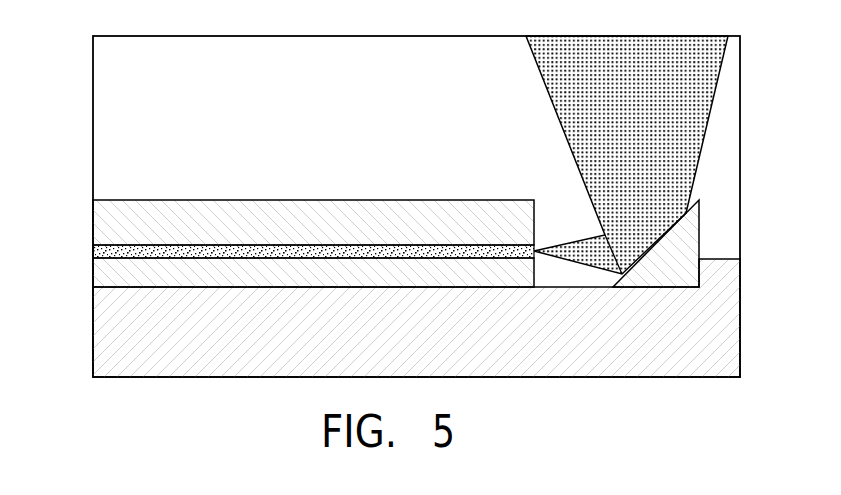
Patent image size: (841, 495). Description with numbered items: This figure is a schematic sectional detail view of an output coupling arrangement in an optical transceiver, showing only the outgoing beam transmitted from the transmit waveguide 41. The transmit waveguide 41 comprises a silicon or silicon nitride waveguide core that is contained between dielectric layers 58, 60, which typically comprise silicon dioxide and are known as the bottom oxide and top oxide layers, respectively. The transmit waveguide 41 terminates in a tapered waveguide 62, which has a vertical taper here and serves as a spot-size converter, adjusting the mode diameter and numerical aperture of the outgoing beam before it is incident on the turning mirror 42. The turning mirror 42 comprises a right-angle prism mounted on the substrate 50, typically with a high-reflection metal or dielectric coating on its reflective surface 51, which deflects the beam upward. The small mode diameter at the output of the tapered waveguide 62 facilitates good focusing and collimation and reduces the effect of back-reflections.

The transmit waveguide 41 is at (93, 248).
The turning mirror 42 is at (695, 232).
The substrate 50 is at (96, 315).
The reflective surface 51 is at (638, 258).
The dielectric layer 58 is at (95, 280).
The dielectric layer 60 is at (111, 200).
The tapered waveguide 62 is at (471, 248).